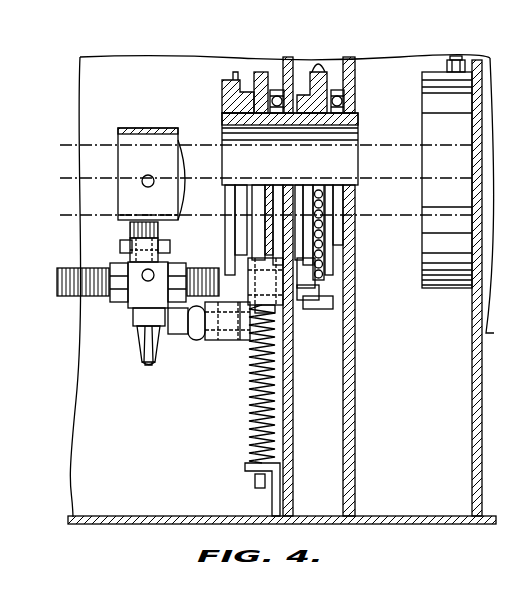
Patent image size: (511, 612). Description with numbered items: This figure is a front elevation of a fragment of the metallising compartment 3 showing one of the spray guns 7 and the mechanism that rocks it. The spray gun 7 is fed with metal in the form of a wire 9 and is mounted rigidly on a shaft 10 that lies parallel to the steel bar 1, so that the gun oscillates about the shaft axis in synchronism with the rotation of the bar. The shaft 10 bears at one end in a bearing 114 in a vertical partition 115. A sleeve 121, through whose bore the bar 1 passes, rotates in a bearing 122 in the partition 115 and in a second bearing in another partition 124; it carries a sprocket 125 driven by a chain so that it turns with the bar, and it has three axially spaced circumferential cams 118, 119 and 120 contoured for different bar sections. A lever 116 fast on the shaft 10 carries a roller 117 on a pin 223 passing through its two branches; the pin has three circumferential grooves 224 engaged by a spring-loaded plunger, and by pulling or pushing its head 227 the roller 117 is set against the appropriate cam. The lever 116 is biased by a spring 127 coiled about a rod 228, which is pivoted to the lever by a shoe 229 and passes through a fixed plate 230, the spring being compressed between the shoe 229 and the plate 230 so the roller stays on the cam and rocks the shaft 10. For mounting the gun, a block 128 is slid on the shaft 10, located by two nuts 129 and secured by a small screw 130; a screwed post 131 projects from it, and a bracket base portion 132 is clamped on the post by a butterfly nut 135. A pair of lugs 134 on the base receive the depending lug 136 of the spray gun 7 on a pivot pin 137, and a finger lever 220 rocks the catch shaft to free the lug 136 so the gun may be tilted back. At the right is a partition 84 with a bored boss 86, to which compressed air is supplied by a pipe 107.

The steel bar 1 is at (75, 148).
The compartment 3 is at (82, 100).
The spray gun 7 is at (150, 128).
The wire 9 is at (146, 179).
The shaft 10 is at (134, 271).
The partition 84 is at (472, 475).
The bored boss 86 is at (430, 288).
The pipe 107 is at (448, 62).
The bearing 114 is at (333, 302).
The vertical partition 115 is at (284, 470).
The lever 116 is at (282, 345).
The roller 117 is at (246, 345).
The circumferential cam 118 is at (222, 95).
The circumferential cam 119 is at (233, 80).
The circumferential cam 120 is at (262, 78).
The sleeve 121 is at (345, 140).
The bearing 122 is at (272, 104).
The partition 124 is at (343, 475).
The sprocket 125 is at (322, 64).
The spring 127 is at (249, 441).
The block 128 is at (135, 315).
The nut 129 is at (116, 295).
The small screw 130 is at (148, 285).
The screwed post 131 is at (143, 360).
The base portion 132 is at (140, 340).
The lugs 134 is at (120, 245).
The butterfly nut 135 is at (150, 366).
The lug 136 is at (130, 256).
The pivot pin 137 is at (172, 248).
The finger lever 220 is at (188, 340).
The pin 223 is at (312, 300).
The circumferential grooves 224 is at (238, 340).
The head 227 is at (197, 340).
The rod 228 is at (255, 482).
The shoe 229 is at (300, 318).
The fixed plate 230 is at (245, 467).